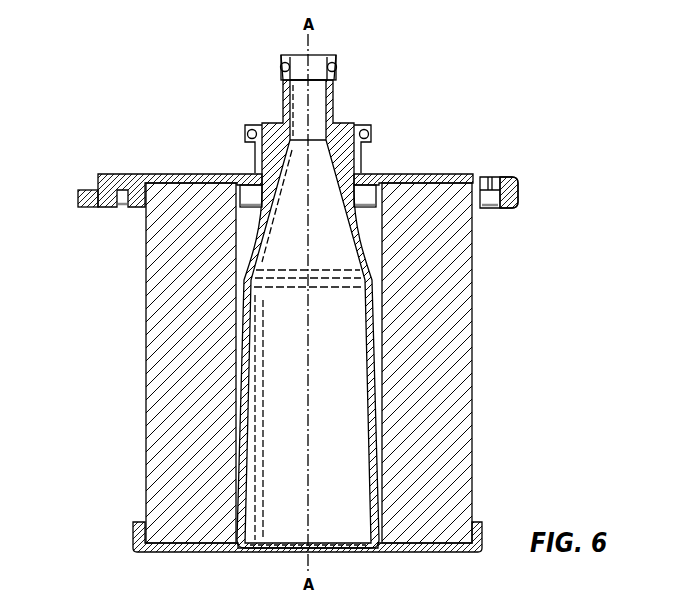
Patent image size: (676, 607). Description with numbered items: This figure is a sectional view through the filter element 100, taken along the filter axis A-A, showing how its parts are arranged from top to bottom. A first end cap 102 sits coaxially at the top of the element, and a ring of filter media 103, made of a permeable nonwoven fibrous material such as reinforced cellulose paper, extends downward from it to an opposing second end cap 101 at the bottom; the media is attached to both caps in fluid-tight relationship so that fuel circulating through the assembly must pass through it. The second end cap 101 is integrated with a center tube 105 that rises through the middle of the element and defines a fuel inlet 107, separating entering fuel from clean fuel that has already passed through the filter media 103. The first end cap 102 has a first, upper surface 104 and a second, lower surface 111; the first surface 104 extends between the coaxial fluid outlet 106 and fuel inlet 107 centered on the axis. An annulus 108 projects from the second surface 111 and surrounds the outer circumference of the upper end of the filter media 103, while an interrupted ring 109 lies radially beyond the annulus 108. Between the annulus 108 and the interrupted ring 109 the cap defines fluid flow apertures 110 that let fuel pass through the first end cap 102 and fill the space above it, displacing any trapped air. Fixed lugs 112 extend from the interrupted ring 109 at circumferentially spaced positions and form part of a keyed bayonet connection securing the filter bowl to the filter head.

The filter element 100 is at (566, 290).
The second end cap 101 is at (483, 530).
The first end cap 102 is at (114, 172).
The filter media 103 is at (462, 368).
The first surface 104 is at (428, 178).
The center tube 105 is at (375, 517).
The fluid outlet 106 is at (255, 158).
The fuel inlet 107 is at (316, 108).
The annulus 108 is at (138, 210).
The interrupted ring 109 is at (500, 210).
The fluid flow apertures 110 is at (520, 190).
The second surface 111 is at (203, 190).
The fixed lugs 112 is at (78, 195).